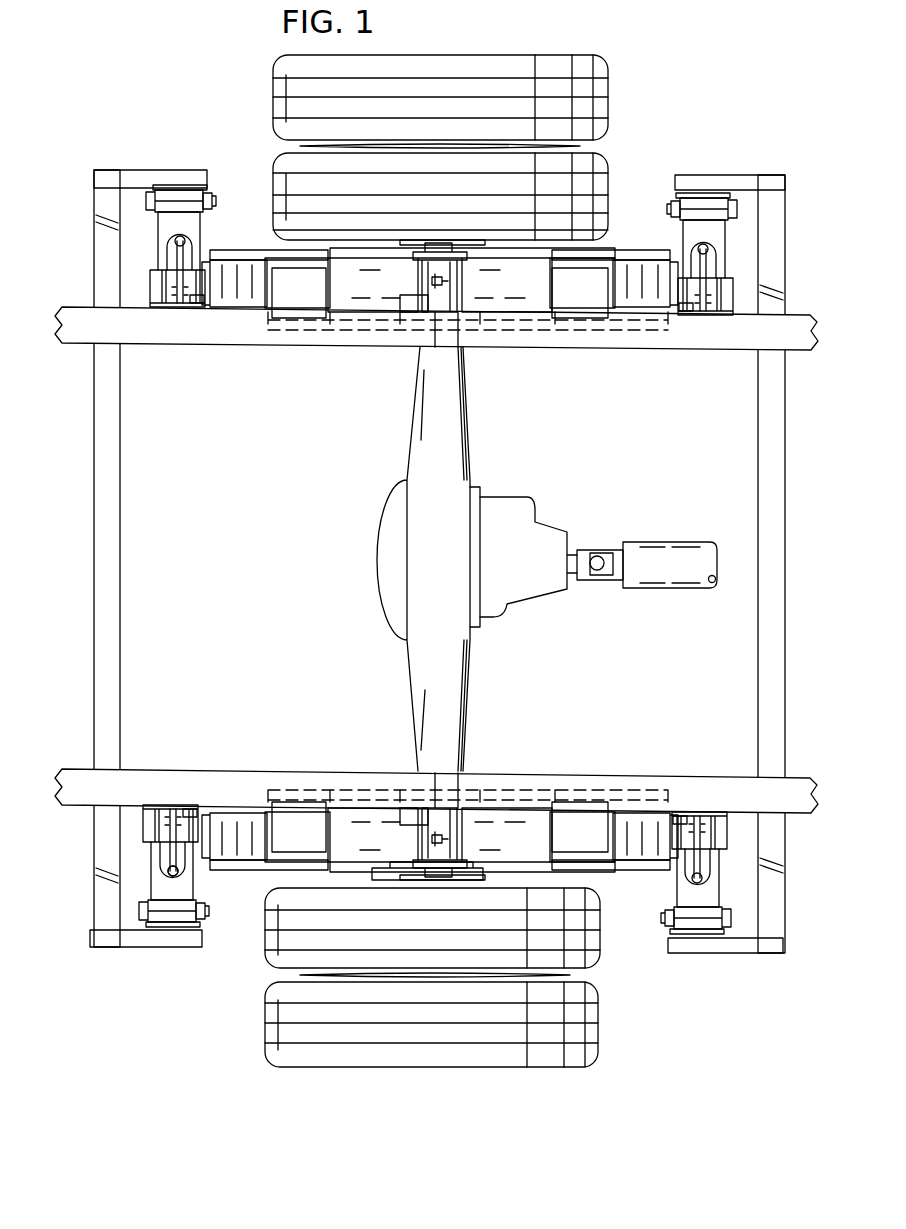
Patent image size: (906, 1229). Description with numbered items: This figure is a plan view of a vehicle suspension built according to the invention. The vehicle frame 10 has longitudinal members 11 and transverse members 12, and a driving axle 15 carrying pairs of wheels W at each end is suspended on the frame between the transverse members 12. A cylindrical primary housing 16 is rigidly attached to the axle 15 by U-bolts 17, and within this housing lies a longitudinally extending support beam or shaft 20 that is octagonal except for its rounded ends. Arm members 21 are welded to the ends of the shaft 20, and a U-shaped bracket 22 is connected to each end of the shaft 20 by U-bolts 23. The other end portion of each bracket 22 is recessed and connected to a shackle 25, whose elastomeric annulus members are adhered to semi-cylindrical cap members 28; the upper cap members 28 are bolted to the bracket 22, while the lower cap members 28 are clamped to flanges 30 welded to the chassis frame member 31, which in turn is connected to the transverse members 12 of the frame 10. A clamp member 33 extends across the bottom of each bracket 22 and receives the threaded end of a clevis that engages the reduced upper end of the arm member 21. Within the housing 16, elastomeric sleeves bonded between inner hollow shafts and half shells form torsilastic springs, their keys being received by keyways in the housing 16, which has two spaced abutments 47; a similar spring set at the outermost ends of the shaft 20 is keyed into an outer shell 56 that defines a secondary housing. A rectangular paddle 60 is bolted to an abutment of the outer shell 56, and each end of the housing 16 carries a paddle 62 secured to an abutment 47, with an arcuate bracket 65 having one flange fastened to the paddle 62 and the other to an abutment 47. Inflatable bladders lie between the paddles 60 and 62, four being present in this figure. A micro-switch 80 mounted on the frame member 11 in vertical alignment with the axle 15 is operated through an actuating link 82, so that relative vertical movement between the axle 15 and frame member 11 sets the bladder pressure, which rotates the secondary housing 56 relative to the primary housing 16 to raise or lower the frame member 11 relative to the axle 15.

The vehicle frame 10 is at (798, 304).
The longitudinal member 11 is at (708, 335).
The transverse member 12 is at (118, 491).
The driving axle 15 is at (430, 433).
The cylindrical primary housing 16 is at (510, 292).
The U-bolt 17 is at (450, 252).
The support beam or shaft 20 is at (153, 303).
The arm member 21 is at (178, 310).
The U-shaped bracket 22 is at (198, 228).
The U-bolt 23 is at (683, 309).
The shackle 25 is at (217, 197).
The semi-cylindrical cap member 28 is at (176, 197).
The flange 30 is at (193, 188).
The chassis frame member 31 is at (152, 175).
The clamp member 33 is at (182, 868).
The abutment 47 is at (373, 874).
The outer shell 56 is at (240, 300).
The paddle 60 is at (305, 263).
The paddle 62 is at (228, 257).
The arcuate bracket 65 is at (300, 290).
The micro-switch 80 is at (410, 302).
The actuating link 82 is at (443, 292).
The wheel W is at (604, 165).